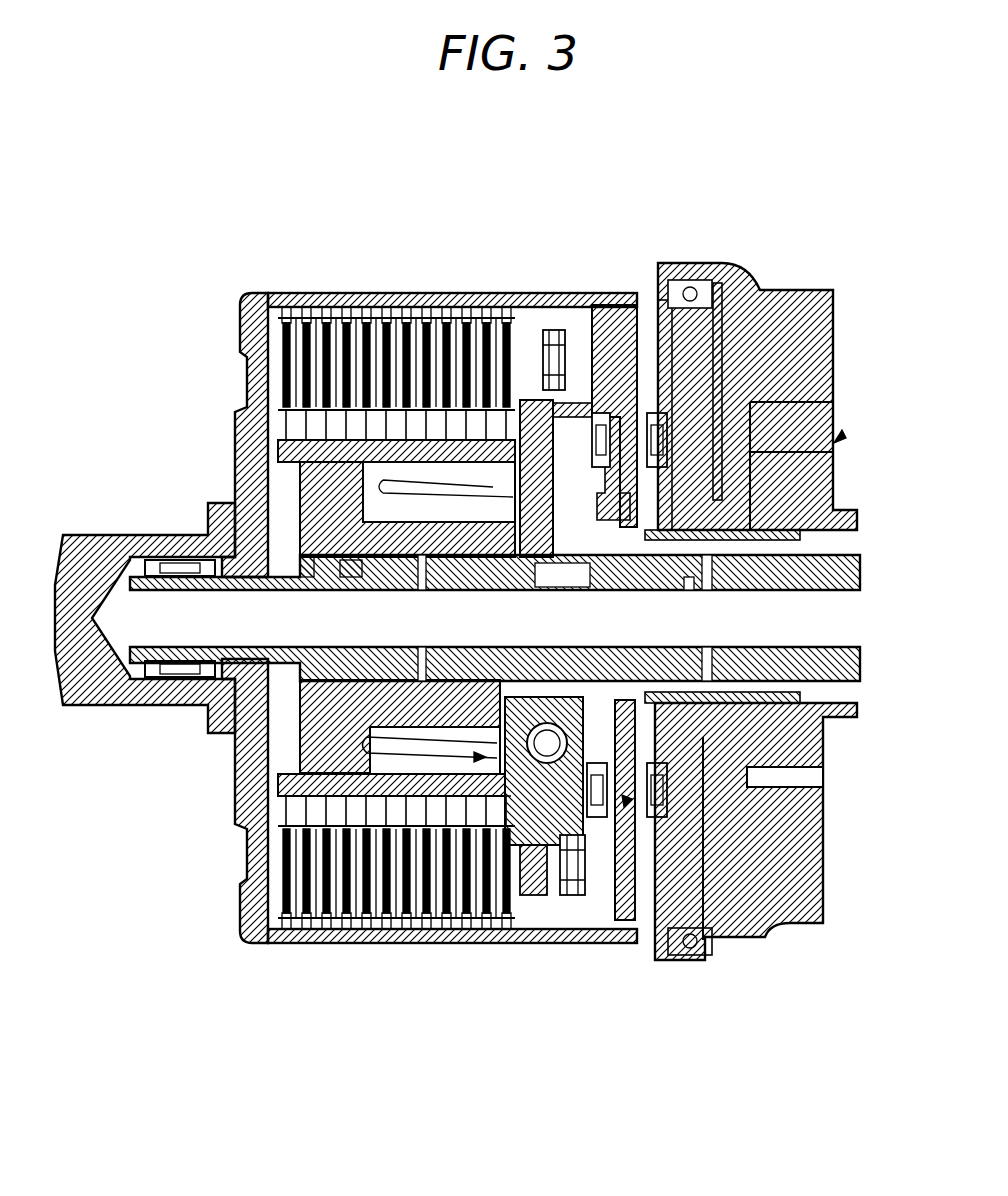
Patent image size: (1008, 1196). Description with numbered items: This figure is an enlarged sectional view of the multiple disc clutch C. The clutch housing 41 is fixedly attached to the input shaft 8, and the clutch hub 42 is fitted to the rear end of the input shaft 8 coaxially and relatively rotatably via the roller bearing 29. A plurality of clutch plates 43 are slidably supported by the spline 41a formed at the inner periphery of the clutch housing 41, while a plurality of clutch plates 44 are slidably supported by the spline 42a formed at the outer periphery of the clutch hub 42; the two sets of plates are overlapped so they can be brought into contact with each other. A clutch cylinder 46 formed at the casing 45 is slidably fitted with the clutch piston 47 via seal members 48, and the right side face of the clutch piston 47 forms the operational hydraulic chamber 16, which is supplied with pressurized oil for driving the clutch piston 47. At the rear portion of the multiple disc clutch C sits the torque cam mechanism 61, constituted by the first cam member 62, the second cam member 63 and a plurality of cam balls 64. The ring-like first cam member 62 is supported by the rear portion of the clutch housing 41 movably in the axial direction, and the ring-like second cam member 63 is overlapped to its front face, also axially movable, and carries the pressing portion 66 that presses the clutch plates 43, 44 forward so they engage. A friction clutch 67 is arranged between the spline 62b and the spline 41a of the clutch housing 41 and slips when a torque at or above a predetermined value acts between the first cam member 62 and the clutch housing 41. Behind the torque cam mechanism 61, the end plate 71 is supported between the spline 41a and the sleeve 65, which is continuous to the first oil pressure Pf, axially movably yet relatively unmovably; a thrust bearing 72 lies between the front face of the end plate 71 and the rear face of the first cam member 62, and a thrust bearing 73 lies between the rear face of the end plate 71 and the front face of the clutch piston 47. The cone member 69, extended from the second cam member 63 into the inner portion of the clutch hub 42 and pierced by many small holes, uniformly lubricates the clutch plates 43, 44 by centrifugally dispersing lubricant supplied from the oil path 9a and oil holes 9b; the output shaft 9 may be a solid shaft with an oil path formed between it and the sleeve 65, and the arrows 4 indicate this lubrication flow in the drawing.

The oil flow arrow 4 is at (475, 757).
The input shaft 8 is at (137, 522).
The output shaft 9 is at (788, 695).
The oil path 9a is at (686, 590).
The oil holes 9b is at (422, 645).
The operational hydraulic chamber 16 is at (717, 847).
The roller bearing 29 is at (181, 562).
The clutch housing 41 is at (226, 418).
The spline 41a is at (445, 298).
The clutch hub 42 is at (550, 363).
The spline 42a is at (536, 540).
The clutch plates 43 is at (350, 322).
The clutch plates 44 is at (417, 440).
The casing 45 is at (770, 300).
The clutch cylinder 46 is at (721, 265).
The clutch piston 47 is at (654, 316).
The seal members 48 is at (708, 653).
The torque cam mechanism 61 is at (440, 752).
The first cam member 62 is at (650, 818).
The spline 62b is at (508, 932).
The second cam member 63 is at (372, 785).
The cam balls 64 is at (547, 745).
The sleeve 65 is at (753, 490).
The pressing portion 66 is at (520, 310).
The friction clutch 67 is at (565, 940).
The cone member 69 is at (355, 585).
The end plate 71 is at (706, 542).
The thrust bearing 72 is at (310, 590).
The thrust bearing 73 is at (734, 386).
The multiple disc clutch C is at (405, 556).
The first oil pressure Pf is at (840, 438).